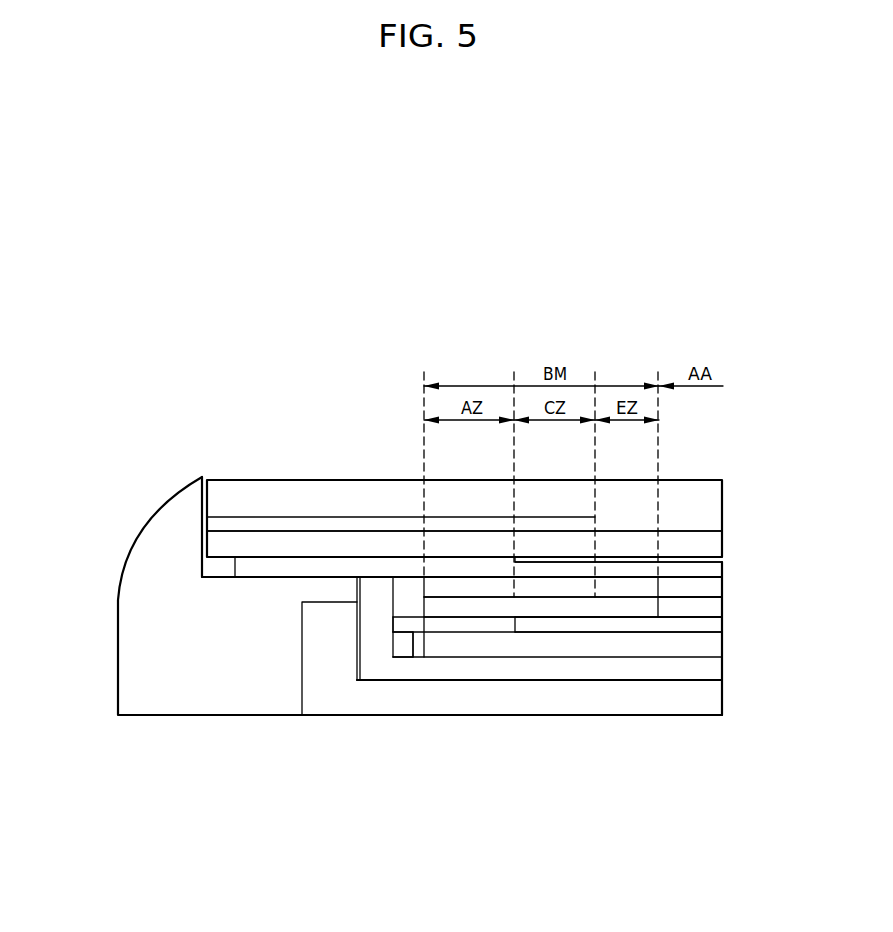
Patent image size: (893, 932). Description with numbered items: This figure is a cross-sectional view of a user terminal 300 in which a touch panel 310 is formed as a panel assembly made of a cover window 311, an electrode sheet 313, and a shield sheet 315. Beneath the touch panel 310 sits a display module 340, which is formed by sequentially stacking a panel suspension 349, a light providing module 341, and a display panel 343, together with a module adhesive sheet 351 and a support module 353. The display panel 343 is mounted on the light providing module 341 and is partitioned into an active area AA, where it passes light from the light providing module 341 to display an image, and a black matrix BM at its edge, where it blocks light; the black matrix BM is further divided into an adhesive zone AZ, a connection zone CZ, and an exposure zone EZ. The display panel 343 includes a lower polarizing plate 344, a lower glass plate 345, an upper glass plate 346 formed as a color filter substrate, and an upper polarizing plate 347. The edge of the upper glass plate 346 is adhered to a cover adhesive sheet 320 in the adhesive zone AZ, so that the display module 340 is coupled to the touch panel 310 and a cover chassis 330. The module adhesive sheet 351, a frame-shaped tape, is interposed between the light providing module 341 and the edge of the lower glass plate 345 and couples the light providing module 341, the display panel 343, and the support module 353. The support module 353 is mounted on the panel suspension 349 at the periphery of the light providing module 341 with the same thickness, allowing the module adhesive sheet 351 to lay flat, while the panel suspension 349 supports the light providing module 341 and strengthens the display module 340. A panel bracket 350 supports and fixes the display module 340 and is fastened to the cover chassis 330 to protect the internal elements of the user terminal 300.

The user terminal 300 is at (729, 298).
The touch panel 310 is at (513, 506).
The cover window 311 is at (707, 500).
The electrode sheet 313 is at (493, 544).
The shield sheet 315 is at (542, 523).
The cover adhesive sheet 320 is at (246, 564).
The cover chassis 330 is at (143, 695).
The display module 340 is at (523, 708).
The light providing module 341 is at (507, 647).
The display panel 343 is at (573, 686).
The lower polarizing plate 344 is at (548, 623).
The lower glass plate 345 is at (585, 607).
The upper glass plate 346 is at (682, 588).
The upper polarizing plate 347 is at (618, 667).
The panel suspension 349 is at (713, 680).
The panel bracket 350 is at (332, 703).
The module adhesive sheet 351 is at (433, 627).
The support module 353 is at (402, 650).